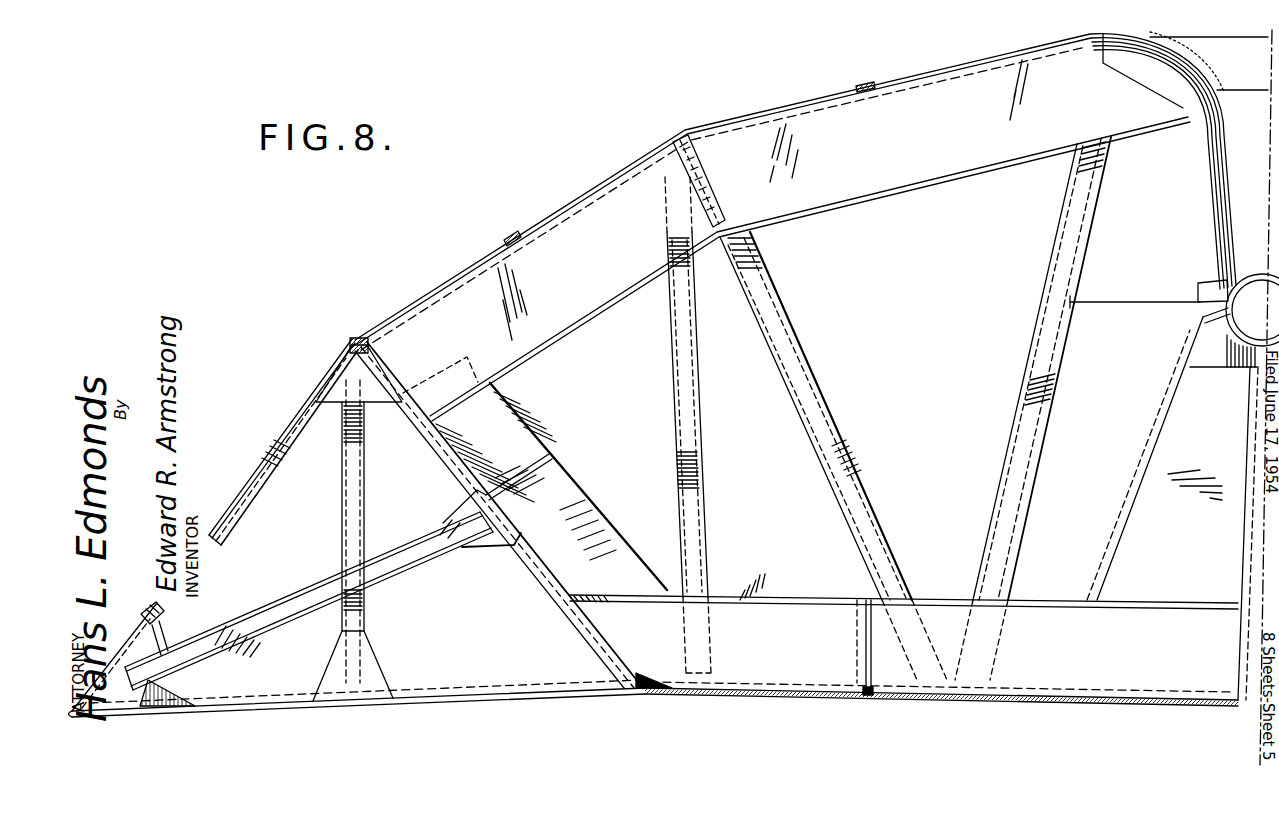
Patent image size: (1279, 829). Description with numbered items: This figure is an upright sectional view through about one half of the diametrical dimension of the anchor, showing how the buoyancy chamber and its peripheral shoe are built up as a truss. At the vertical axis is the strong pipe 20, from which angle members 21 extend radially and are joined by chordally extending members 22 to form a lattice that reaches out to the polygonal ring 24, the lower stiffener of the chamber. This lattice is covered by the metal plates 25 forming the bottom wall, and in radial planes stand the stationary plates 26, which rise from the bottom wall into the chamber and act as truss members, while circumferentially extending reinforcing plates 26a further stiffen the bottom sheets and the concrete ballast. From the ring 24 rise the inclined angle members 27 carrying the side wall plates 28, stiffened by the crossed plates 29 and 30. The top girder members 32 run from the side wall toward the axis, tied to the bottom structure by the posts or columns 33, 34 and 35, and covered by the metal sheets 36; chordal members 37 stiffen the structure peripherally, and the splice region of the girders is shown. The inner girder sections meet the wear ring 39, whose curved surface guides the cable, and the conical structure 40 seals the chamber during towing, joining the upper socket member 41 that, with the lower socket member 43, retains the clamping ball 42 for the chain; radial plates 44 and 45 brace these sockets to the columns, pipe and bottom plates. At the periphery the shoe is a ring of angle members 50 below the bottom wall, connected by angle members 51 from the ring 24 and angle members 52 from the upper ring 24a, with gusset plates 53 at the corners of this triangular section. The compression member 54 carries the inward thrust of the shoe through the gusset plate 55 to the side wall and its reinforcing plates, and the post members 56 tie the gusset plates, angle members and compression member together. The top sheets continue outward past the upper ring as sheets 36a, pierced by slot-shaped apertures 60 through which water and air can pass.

The pipe 20 is at (1243, 558).
The angle members 21 is at (1072, 693).
The chordally extending members 22 is at (866, 697).
The ring 24 is at (655, 692).
The upper ring 24a is at (359, 354).
The metal plates 25 is at (982, 698).
The stationary plates 26 is at (770, 612).
The circumferentially extending reinforcing plates 26a is at (863, 638).
The inclined angle members 27 is at (542, 577).
The side wall plates 28 is at (443, 448).
The crossed plates 29 is at (597, 527).
The crossed plates 30 is at (553, 463).
The top girder members 32 is at (872, 91).
The post or column 33 is at (686, 400).
The post or column 34 is at (835, 414).
The post or column 35 is at (1028, 356).
The metal sheets 36 is at (770, 117).
The sheets 36a is at (302, 407).
The chordal members 37 is at (707, 192).
The wear ring 39 is at (1178, 76).
The conical structure 40 is at (1233, 163).
The upper socket member 41 is at (1208, 288).
The clamping ball 42 is at (1232, 318).
The lower socket member 43 is at (1232, 352).
The radial plates 44 is at (1114, 303).
The radial plates 45 is at (1153, 482).
The angle members of the shoe 50 is at (80, 718).
The angle members 51 is at (438, 698).
The angle members 52 is at (280, 456).
The gusset plates 53 is at (180, 687).
The member 54 is at (275, 602).
The gusset plate 55 is at (458, 504).
The post members 56 is at (343, 511).
The apertures 60 is at (250, 470).